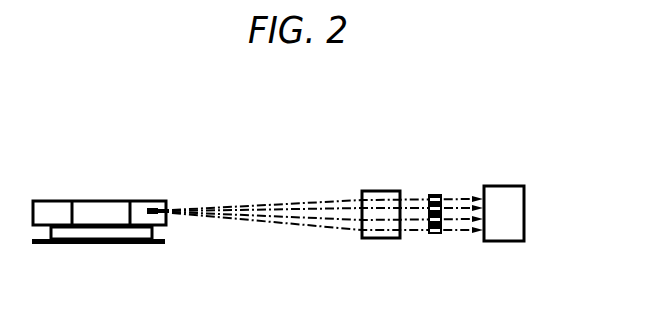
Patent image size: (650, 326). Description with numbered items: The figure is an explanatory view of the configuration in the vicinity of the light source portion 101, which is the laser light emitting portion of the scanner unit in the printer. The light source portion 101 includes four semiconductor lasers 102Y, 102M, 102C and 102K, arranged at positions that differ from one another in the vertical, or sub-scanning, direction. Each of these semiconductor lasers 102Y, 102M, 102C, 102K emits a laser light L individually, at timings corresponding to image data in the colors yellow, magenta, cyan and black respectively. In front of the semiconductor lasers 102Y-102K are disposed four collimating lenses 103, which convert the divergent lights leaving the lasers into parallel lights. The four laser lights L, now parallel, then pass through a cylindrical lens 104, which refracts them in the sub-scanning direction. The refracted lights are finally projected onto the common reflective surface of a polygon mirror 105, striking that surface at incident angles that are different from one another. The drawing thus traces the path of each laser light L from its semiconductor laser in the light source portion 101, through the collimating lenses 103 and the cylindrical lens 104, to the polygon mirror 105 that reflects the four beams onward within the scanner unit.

The light source portion 101 is at (524, 207).
The semiconductor laser 102Y is at (478, 198).
The semiconductor laser 102M is at (495, 212).
The semiconductor laser 102C is at (492, 226).
The semiconductor laser 102K is at (478, 232).
The collimating lenses 103 is at (433, 196).
The cylindrical lens 104 is at (383, 239).
The polygon mirror 105 is at (90, 211).
The laser light L is at (292, 203).